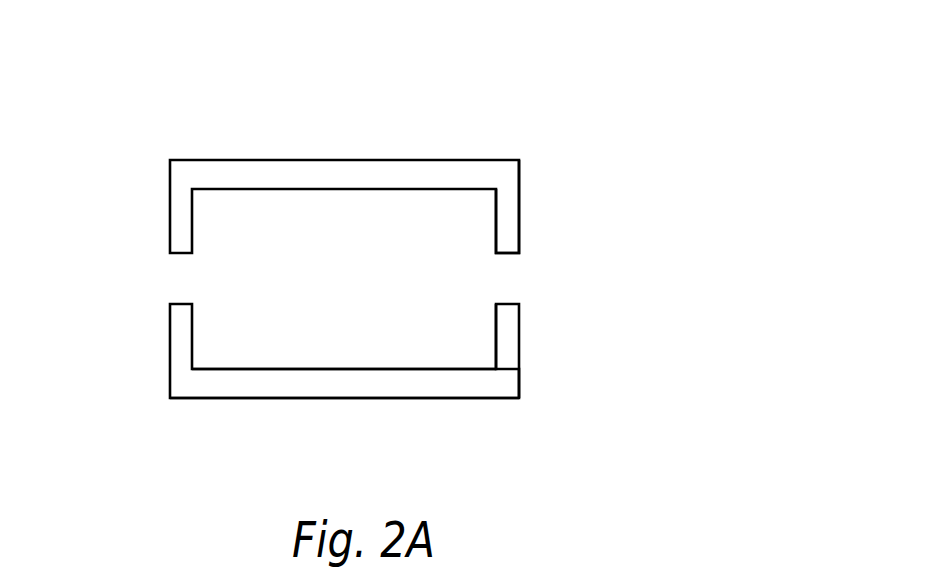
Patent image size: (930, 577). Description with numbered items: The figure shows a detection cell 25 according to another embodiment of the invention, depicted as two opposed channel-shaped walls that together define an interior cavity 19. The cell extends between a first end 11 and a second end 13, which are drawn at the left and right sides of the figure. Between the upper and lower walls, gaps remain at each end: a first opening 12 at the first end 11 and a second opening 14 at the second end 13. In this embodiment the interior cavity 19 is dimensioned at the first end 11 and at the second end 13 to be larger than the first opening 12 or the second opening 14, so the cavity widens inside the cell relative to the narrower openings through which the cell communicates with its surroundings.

The detection cell 25 is at (361, 254).
The first opening 12 is at (170, 273).
The second opening 14 is at (513, 280).
The first end 11 is at (170, 348).
The second end 13 is at (519, 368).
The interior cavity 19 is at (428, 343).